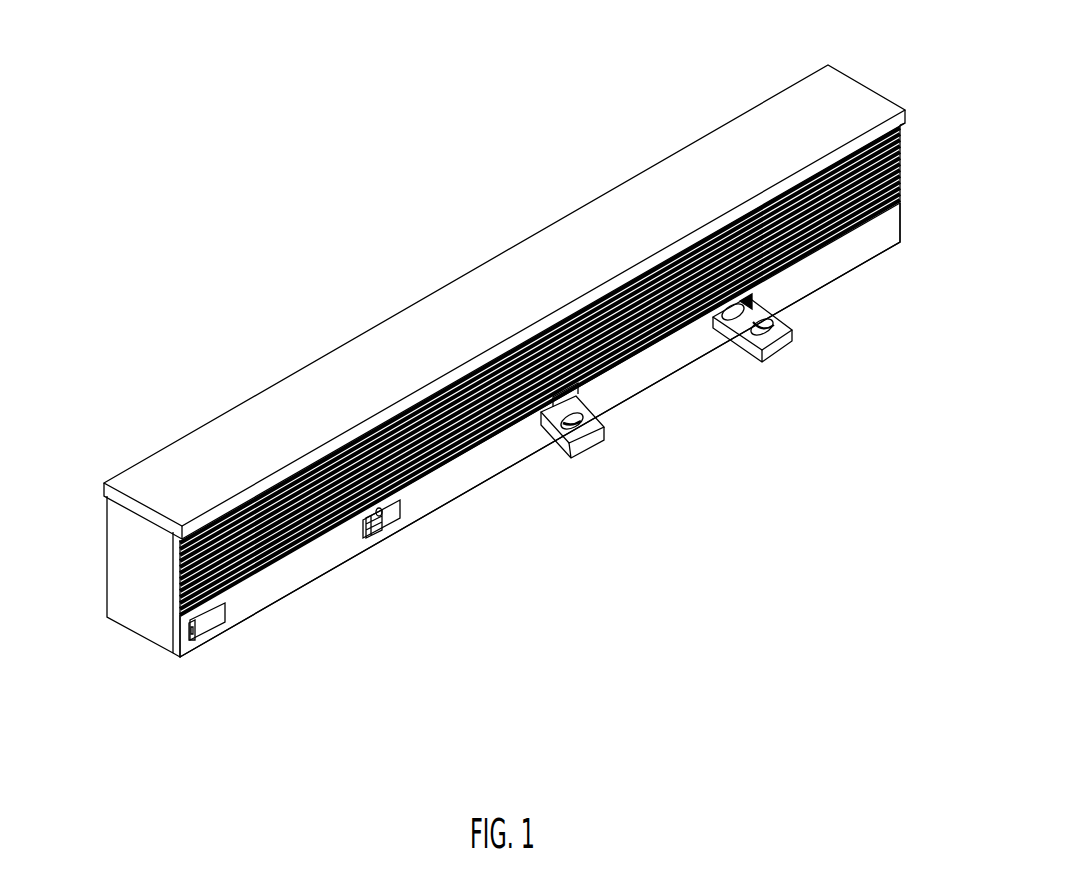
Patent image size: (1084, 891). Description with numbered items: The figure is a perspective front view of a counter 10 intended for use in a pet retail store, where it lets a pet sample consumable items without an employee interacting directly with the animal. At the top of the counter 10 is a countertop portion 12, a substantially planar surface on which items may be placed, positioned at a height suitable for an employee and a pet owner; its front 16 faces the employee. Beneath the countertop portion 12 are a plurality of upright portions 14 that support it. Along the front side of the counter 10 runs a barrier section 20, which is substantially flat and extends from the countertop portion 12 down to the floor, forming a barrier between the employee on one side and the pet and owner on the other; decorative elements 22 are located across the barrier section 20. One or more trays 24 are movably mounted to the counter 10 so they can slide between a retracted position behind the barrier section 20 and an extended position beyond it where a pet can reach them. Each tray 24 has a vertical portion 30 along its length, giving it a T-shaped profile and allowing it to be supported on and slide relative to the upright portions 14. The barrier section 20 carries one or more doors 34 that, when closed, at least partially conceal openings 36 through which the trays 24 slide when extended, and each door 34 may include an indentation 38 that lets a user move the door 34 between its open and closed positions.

The counter 10 is at (312, 232).
The countertop portion 12 is at (692, 175).
The upright portions 14 is at (122, 566).
The front 16 is at (903, 113).
The barrier section 20 is at (668, 358).
The decorative elements 22 is at (197, 550).
The trays 24 is at (592, 445).
The vertical portion 30 is at (740, 358).
The doors 34 is at (213, 620).
The openings 36 is at (373, 538).
The indentation 38 is at (191, 641).